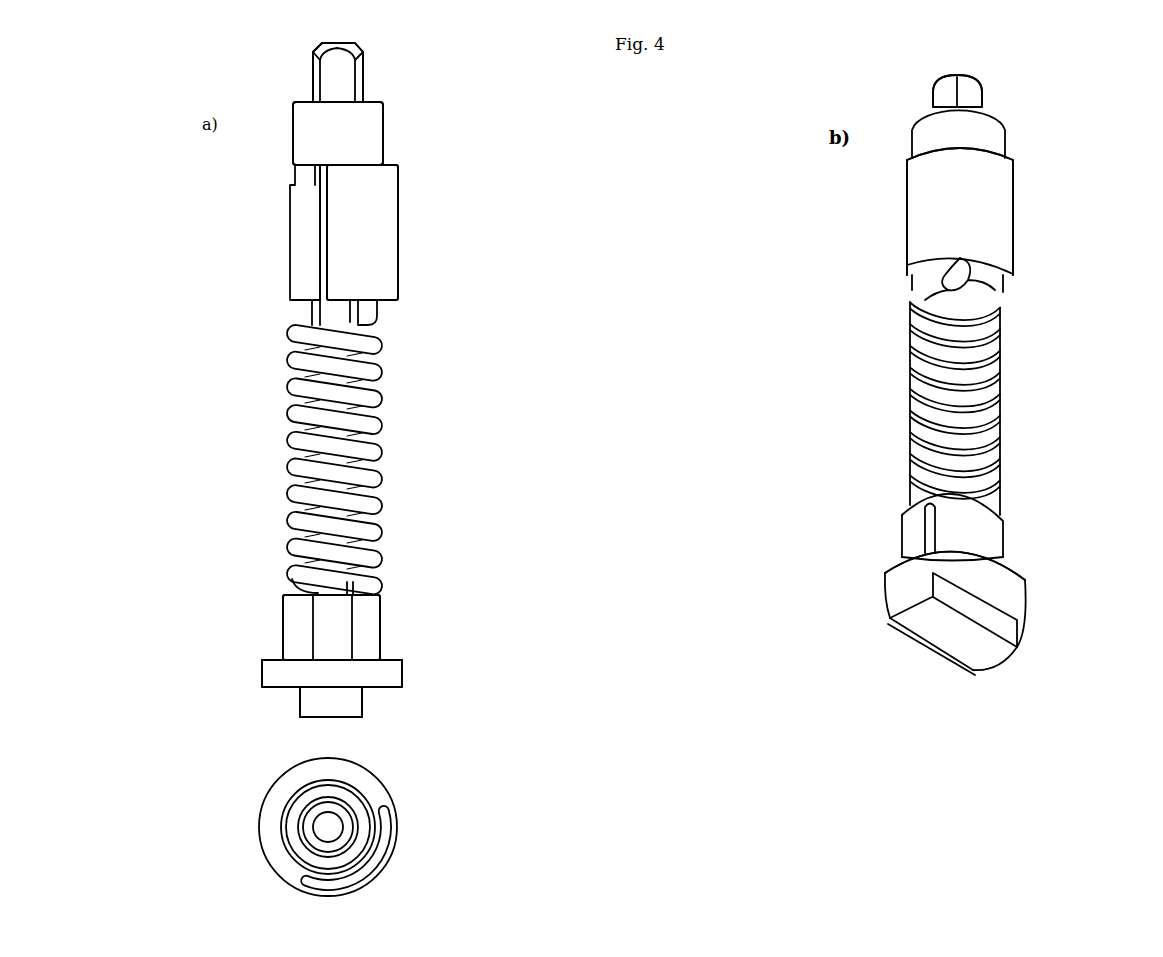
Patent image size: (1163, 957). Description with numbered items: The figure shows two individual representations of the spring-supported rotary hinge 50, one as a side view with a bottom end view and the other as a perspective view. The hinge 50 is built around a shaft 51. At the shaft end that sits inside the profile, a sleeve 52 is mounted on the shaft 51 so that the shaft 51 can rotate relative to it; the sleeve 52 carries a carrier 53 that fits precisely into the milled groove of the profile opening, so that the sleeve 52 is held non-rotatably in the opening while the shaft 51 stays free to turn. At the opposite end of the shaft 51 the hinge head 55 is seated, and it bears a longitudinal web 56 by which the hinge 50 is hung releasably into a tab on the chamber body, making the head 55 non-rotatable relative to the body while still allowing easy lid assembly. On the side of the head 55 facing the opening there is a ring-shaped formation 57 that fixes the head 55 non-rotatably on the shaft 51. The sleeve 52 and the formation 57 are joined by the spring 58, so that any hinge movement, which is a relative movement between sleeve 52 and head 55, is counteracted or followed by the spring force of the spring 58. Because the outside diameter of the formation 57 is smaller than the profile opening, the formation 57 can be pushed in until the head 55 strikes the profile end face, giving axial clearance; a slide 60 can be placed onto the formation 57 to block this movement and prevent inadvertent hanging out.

The rotary hinge 50 is at (474, 258).
The shaft 51 is at (365, 70).
The sleeve 52 is at (272, 261).
The carrier 53 is at (385, 231).
The hinge head 55 is at (392, 676).
The longitudinal web 56 is at (362, 708).
The ring-shaped formation 57 is at (390, 609).
The spring 58 is at (375, 500).
The slide 60 is at (822, 531).